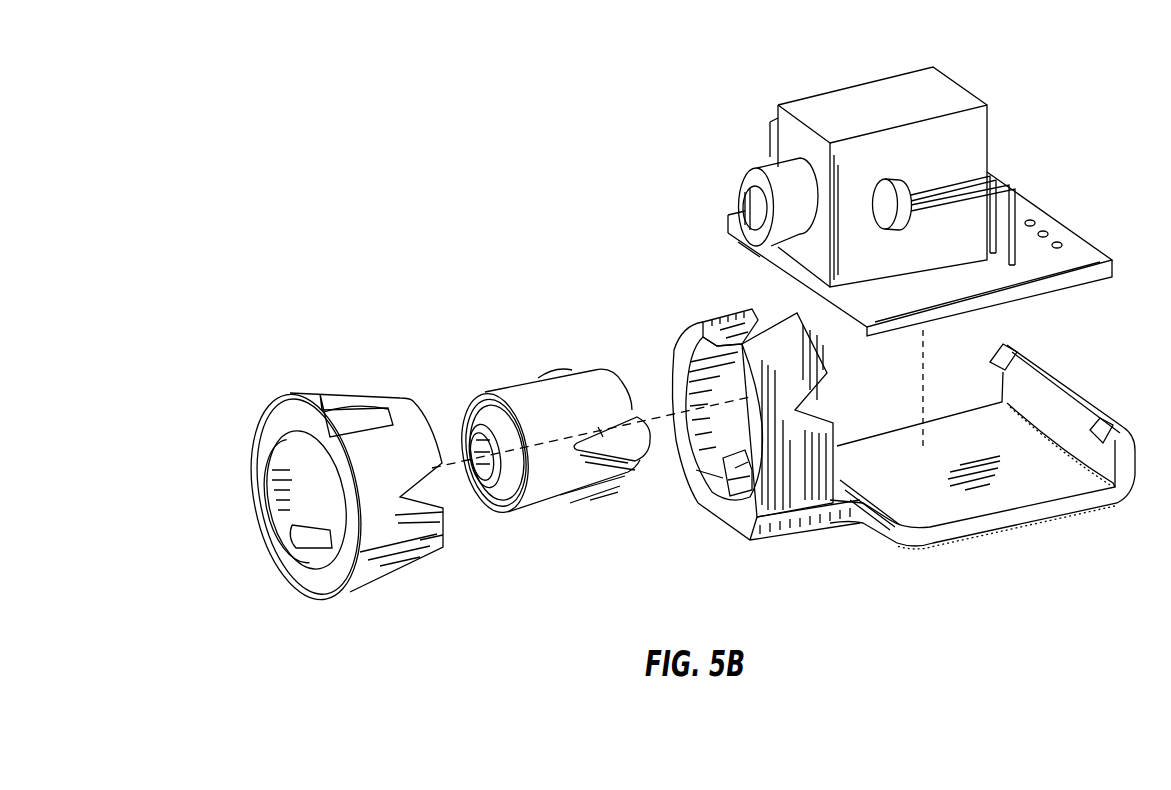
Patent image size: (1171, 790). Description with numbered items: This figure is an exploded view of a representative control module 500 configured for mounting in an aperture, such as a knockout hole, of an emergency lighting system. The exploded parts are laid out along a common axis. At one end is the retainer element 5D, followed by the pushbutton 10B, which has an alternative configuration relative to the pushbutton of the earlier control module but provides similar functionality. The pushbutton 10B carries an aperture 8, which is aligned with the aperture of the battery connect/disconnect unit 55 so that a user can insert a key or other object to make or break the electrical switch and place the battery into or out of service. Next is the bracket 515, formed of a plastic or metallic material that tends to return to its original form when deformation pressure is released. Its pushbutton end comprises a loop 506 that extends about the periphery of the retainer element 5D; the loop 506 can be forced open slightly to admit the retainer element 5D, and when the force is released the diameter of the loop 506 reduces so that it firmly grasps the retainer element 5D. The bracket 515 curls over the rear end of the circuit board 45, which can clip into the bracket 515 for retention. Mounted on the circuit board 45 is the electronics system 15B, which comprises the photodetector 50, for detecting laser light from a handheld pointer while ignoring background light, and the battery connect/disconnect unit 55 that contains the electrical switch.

The control module 500 is at (333, 102).
The retainer element 5D is at (322, 372).
The pushbutton 10B is at (513, 358).
The aperture 8 is at (492, 463).
The bracket 515 is at (710, 297).
The loop 506 is at (793, 490).
The electronics system 15B is at (745, 108).
The photodetector 50 is at (893, 178).
The battery connect/disconnect unit 55 is at (920, 83).
The circuit board 45 is at (1080, 255).